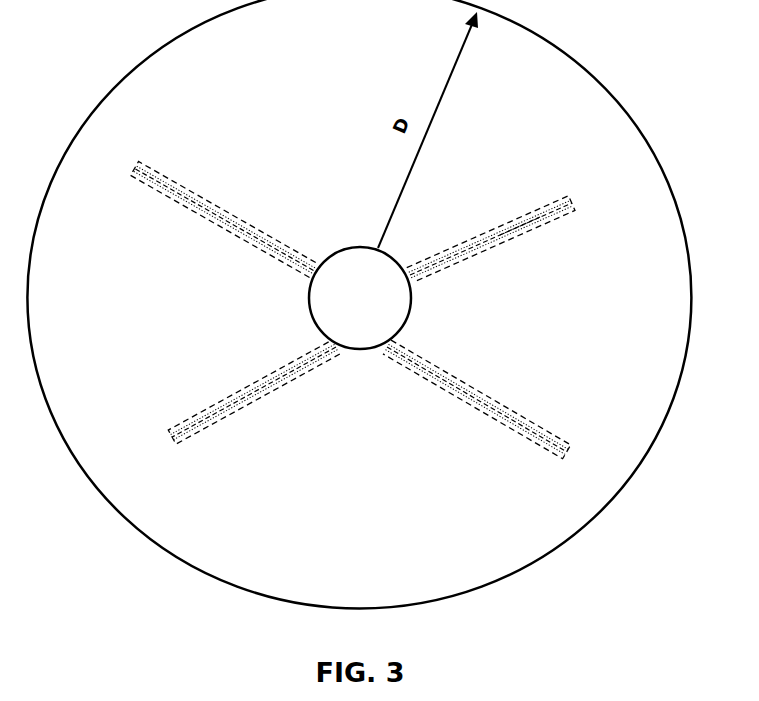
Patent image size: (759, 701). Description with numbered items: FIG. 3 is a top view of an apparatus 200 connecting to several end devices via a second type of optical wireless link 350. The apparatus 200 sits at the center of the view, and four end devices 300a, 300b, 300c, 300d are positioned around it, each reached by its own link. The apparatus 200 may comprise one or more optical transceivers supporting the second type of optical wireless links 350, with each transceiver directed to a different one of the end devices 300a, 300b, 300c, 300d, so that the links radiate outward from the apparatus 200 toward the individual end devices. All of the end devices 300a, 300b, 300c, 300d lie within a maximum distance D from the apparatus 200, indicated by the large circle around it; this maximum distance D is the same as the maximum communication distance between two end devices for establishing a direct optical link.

The apparatus 200 is at (360, 298).
The end device 300a is at (216, 202).
The end device 300b is at (526, 232).
The end device 300c is at (224, 396).
The end device 300d is at (505, 411).
The second type of optical wireless link 350 is at (525, 232).